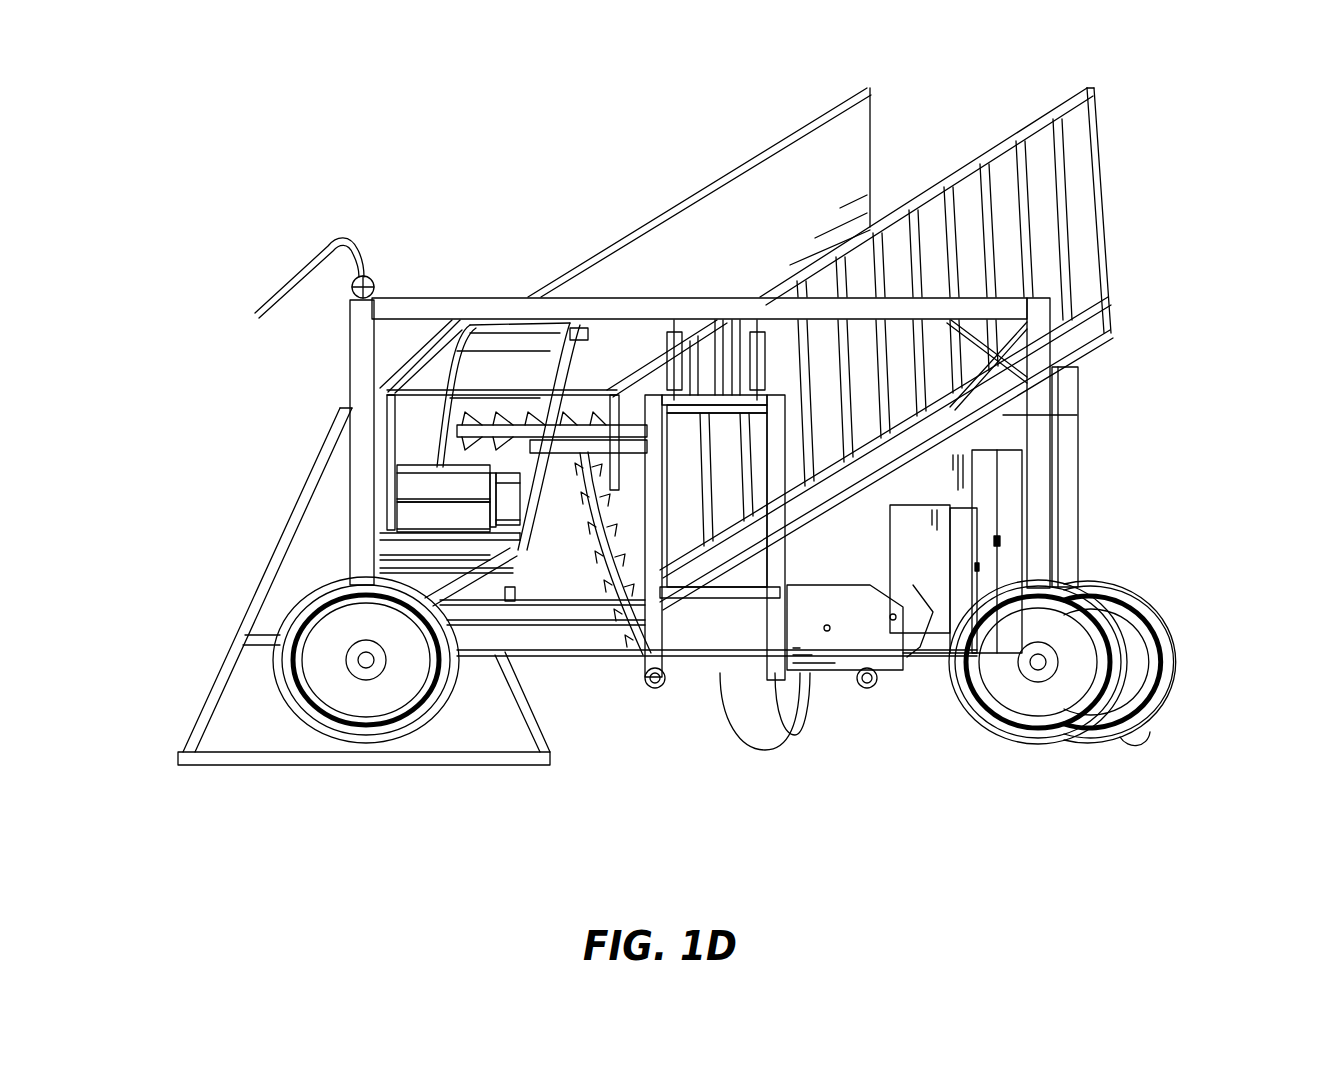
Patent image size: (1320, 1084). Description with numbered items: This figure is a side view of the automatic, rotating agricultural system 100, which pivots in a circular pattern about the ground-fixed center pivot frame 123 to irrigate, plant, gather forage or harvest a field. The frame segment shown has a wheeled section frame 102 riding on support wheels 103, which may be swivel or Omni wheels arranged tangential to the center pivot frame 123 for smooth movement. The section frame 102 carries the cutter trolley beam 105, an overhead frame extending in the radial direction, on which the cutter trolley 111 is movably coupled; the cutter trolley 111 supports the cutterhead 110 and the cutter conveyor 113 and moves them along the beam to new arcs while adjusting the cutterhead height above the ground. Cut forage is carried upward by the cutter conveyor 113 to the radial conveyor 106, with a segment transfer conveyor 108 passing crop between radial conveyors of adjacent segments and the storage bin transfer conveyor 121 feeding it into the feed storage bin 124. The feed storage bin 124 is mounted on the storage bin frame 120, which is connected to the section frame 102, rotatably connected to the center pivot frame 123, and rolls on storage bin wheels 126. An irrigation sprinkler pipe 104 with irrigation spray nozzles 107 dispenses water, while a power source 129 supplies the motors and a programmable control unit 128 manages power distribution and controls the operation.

The automatic, rotating agricultural system 100 is at (190, 69).
The section frame 102 is at (1046, 470).
The support wheels 103 is at (348, 723).
The irrigation sprinkler pipe 104 is at (370, 279).
The cutter trolley beam 105 is at (670, 347).
The radial conveyor 106 is at (418, 524).
The irrigation spray nozzles 107 is at (257, 313).
The segment transfer conveyor 108 is at (406, 480).
The cutterhead 110 is at (888, 654).
The cutter trolley 111 is at (720, 597).
The cutter conveyor 113 is at (622, 607).
The storage bin frame 120 is at (1068, 558).
The storage bin transfer conveyor 121 is at (498, 342).
The center pivot frame 123 is at (250, 630).
The feed storage bin 124 is at (702, 216).
The storage bin wheels 126 is at (747, 727).
The control unit 128 is at (910, 567).
The power source 129 is at (1012, 527).